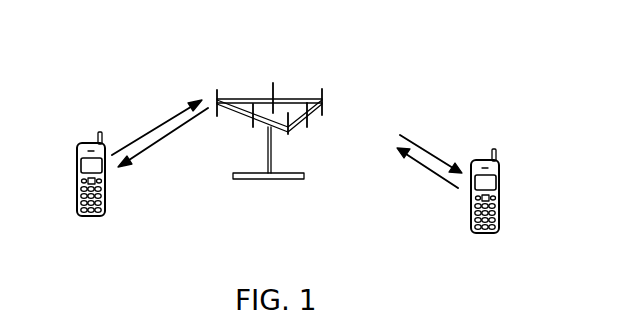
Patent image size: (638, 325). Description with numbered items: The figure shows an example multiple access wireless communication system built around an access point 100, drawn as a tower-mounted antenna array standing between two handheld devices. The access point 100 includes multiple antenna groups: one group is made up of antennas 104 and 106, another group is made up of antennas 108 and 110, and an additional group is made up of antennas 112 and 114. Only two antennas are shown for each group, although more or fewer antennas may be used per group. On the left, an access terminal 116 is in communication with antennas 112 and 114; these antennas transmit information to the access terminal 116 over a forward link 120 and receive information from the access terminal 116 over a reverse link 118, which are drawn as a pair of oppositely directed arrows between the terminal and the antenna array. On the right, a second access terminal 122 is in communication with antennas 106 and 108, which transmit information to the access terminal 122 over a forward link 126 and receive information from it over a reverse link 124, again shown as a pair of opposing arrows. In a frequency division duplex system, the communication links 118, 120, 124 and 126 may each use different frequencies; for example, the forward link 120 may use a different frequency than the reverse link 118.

The access point 100 is at (258, 180).
The antenna 104 is at (289, 133).
The antenna 106 is at (308, 124).
The antenna 108 is at (323, 103).
The antenna 110 is at (273, 90).
The antenna 112 is at (217, 96).
The antenna 114 is at (253, 126).
The access terminal 116 is at (77, 160).
The reverse link 118 is at (163, 120).
The forward link 120 is at (157, 143).
The access terminal 122 is at (500, 180).
The reverse link 124 is at (435, 173).
The forward link 126 is at (427, 152).